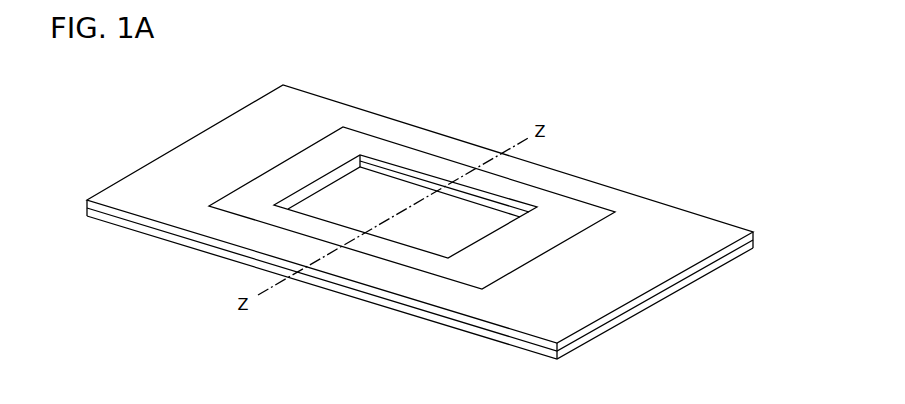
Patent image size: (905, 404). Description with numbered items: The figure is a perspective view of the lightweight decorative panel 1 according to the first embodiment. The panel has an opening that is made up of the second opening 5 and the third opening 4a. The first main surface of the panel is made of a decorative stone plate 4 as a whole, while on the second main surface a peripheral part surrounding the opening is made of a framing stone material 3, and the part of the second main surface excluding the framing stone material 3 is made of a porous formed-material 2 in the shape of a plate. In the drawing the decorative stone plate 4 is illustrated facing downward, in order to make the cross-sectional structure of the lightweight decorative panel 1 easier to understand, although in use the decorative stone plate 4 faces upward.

The lightweight decorative panel 1 is at (565, 126).
The porous formed-material 2 is at (668, 230).
The framing stone material 3 is at (575, 213).
The decorative stone plate 4 is at (652, 307).
The third opening 4a is at (381, 181).
The second opening 5 is at (408, 184).